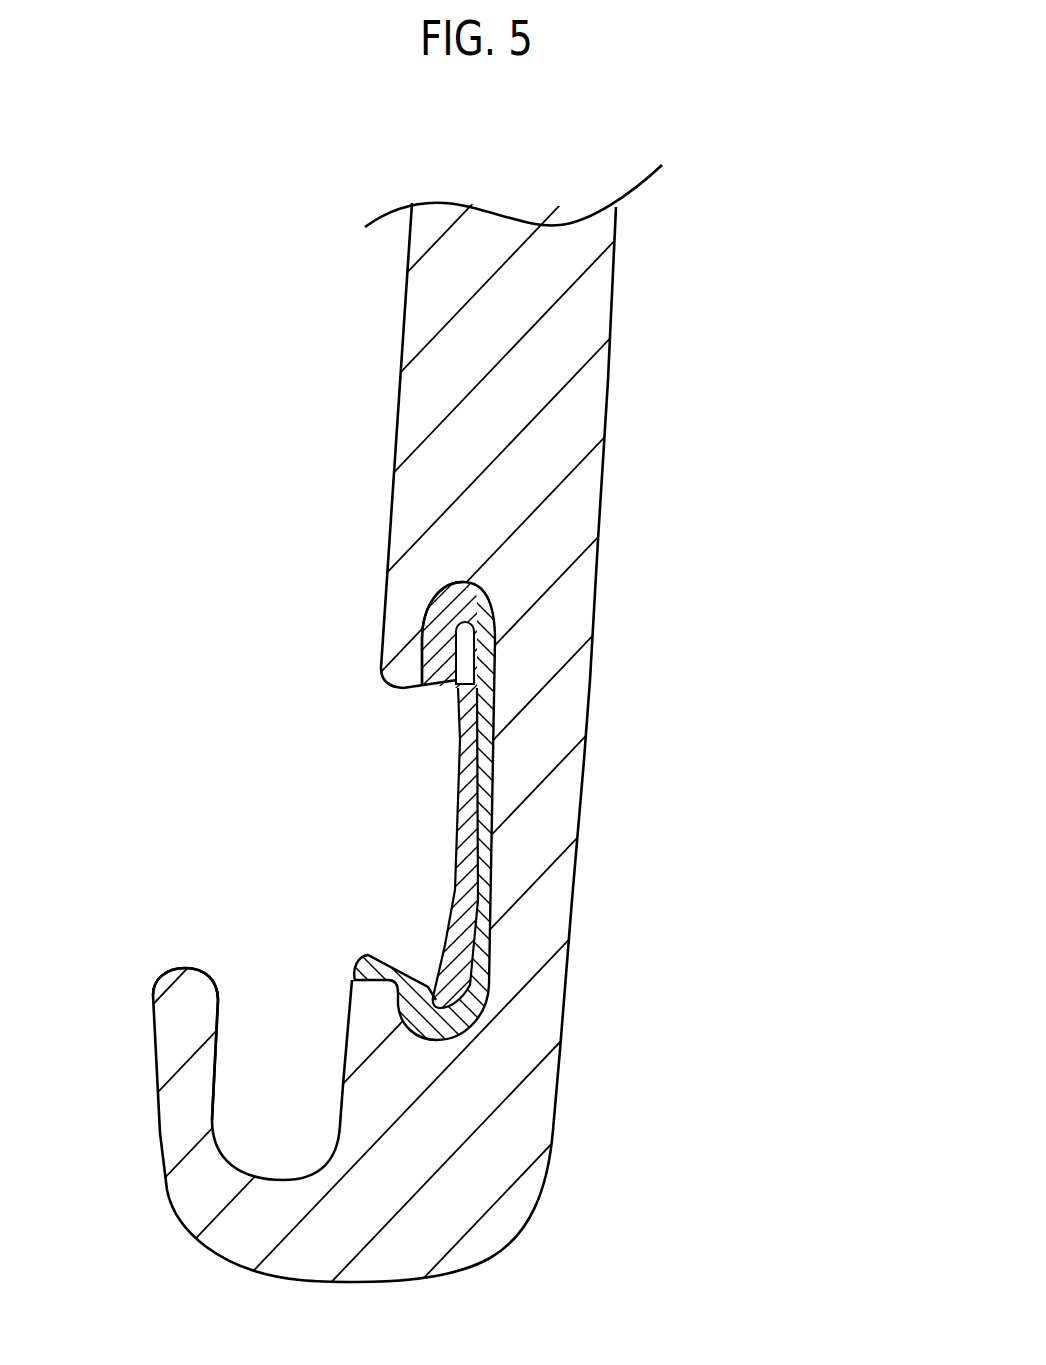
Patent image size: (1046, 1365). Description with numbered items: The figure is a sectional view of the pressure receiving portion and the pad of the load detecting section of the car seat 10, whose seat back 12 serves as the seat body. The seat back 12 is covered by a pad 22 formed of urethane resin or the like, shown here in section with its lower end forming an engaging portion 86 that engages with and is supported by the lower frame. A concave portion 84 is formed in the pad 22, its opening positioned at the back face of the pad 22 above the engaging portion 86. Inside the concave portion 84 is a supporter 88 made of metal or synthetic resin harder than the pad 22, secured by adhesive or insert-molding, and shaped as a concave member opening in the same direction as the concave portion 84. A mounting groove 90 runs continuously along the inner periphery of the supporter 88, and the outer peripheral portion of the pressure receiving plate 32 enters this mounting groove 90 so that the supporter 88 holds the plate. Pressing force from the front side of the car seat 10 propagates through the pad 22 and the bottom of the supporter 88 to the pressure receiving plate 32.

The car seat 10 is at (368, 686).
The seat back 12 is at (688, 432).
The pad 22 is at (570, 708).
The pressure receiving plate 32 is at (460, 817).
The concave portion 84 is at (458, 865).
The engaging portion 86 is at (153, 1057).
The supporter 88 is at (421, 692).
The mounting groove 90 is at (462, 692).